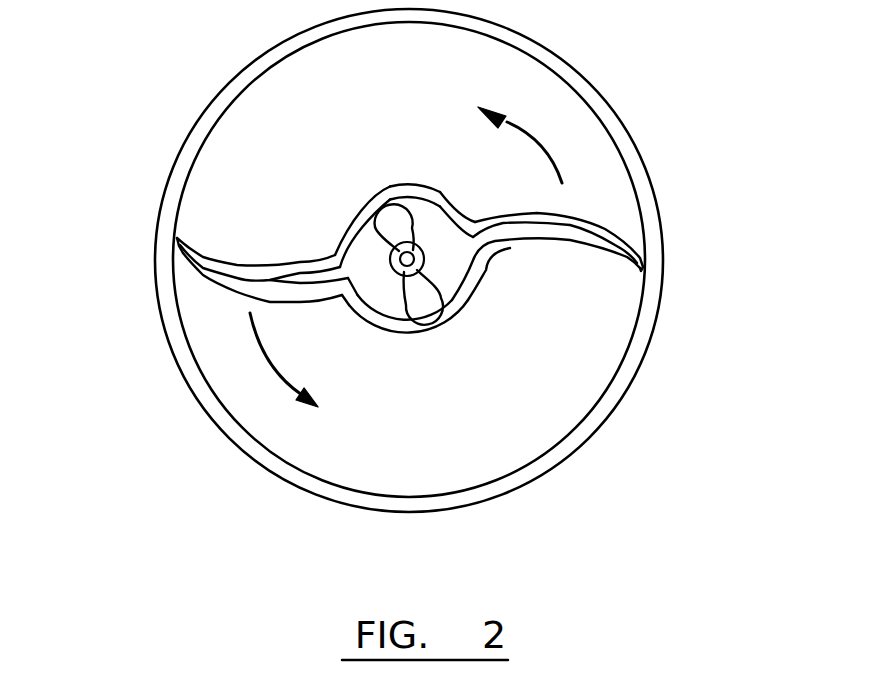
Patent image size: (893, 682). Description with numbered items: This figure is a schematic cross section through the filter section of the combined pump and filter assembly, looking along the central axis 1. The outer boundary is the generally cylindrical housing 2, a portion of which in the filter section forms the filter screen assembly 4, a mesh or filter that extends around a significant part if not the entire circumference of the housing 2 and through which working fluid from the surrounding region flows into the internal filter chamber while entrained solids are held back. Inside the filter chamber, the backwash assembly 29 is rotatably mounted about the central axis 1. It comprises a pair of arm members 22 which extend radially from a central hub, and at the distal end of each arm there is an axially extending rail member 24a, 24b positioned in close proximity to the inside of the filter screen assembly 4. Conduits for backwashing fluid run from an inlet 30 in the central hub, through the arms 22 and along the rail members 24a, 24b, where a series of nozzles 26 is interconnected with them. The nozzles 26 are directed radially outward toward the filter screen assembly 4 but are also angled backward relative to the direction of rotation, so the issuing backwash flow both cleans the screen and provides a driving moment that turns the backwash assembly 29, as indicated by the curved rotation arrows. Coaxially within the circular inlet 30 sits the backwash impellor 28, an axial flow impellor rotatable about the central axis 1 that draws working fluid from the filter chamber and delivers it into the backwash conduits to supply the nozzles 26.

The central axis 1 is at (391, 259).
The housing 2 is at (222, 428).
The filter screen assembly 4 is at (177, 355).
The arm members 22 is at (411, 234).
The rail member 24a is at (190, 270).
The rail member 24b is at (623, 233).
The nozzles 26 is at (178, 243).
The backwash impellor 28 is at (421, 307).
The backwash assembly 29 is at (457, 312).
The inlet 30 is at (427, 223).